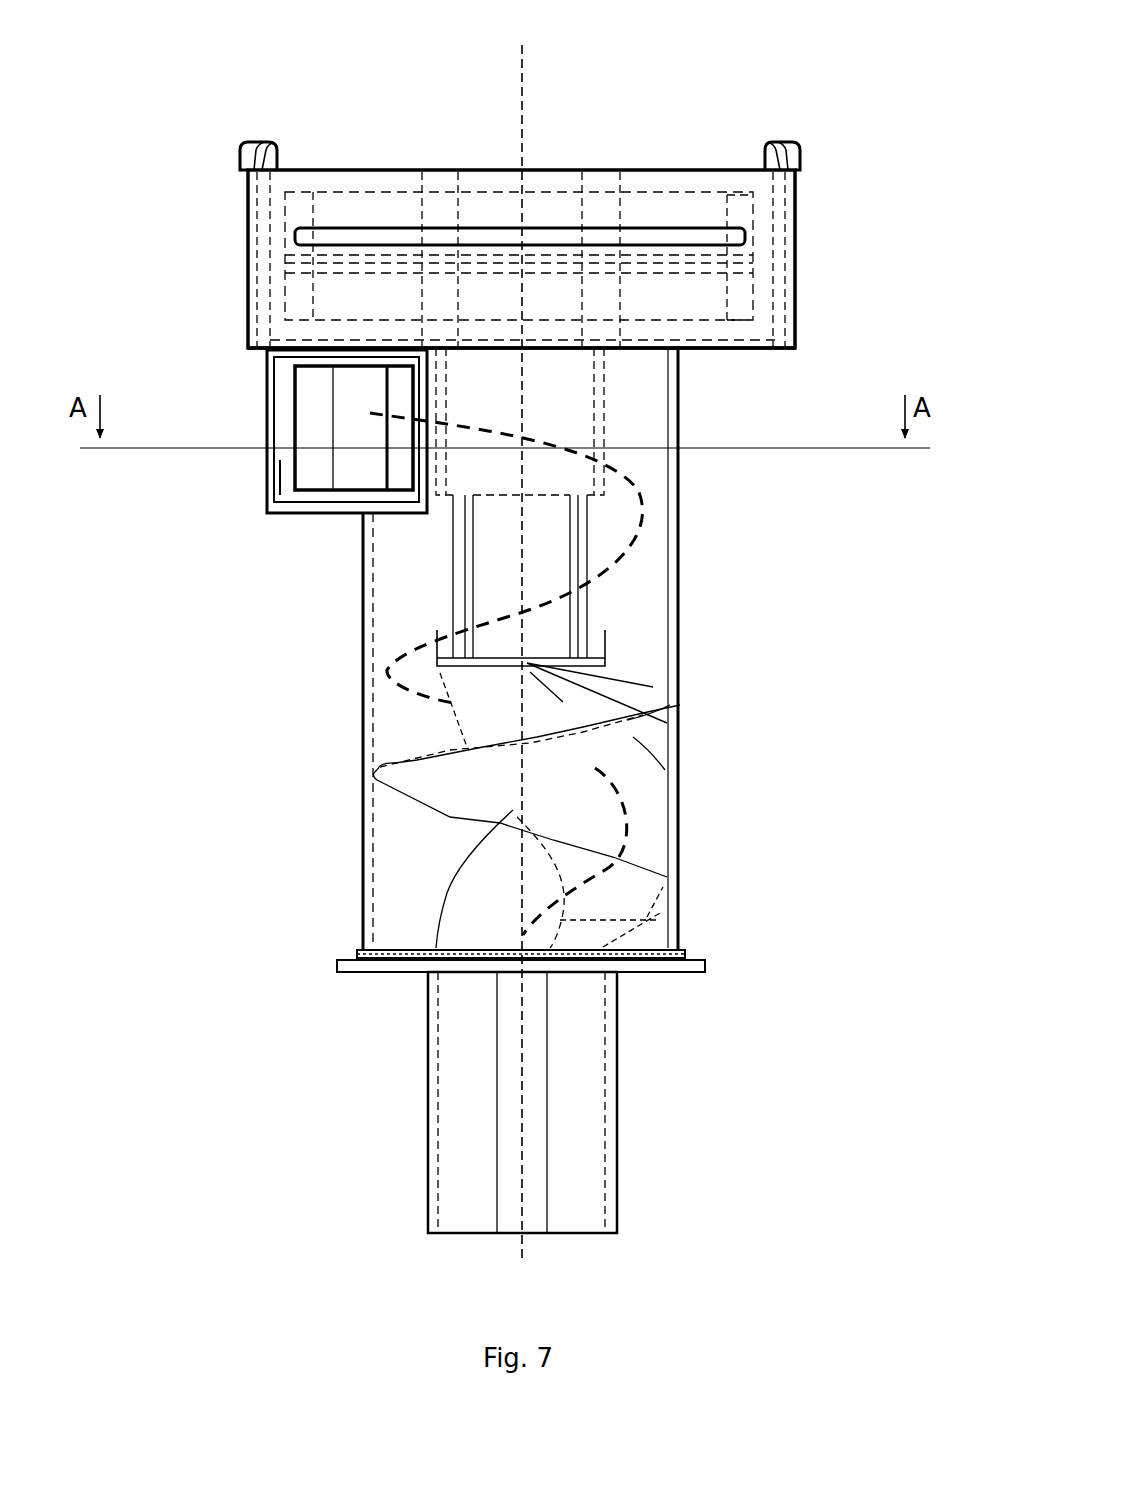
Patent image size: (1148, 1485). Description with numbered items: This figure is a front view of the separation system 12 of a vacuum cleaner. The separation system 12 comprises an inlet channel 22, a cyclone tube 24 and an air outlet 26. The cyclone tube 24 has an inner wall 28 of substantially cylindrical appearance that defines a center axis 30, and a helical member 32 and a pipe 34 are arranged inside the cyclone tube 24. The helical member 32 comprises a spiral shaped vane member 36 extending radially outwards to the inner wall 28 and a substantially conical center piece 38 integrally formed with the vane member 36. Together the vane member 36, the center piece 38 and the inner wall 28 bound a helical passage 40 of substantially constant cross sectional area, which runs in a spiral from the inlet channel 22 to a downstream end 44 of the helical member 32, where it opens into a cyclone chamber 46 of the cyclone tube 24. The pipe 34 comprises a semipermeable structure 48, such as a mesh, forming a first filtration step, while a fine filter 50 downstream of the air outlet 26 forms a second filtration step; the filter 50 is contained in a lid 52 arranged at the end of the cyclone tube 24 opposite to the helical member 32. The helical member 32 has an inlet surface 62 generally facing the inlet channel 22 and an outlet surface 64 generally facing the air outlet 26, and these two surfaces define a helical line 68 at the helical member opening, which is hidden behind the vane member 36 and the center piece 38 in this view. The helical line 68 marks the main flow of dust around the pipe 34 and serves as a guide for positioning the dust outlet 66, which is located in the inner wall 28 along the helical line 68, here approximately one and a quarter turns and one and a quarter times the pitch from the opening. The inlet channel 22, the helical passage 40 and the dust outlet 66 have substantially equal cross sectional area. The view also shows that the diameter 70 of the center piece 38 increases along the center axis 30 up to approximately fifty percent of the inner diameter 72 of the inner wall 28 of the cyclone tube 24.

The separation system 12 is at (252, 86).
The inlet channel 22 is at (580, 1053).
The cyclone tube 24 is at (660, 523).
The air outlet 26 is at (545, 327).
The inner wall 28 is at (672, 424).
The center axis 30 is at (525, 73).
The helical member 32 is at (630, 885).
The pipe 34 is at (492, 553).
The vane member 36 is at (633, 737).
The center piece 38 is at (477, 713).
The helical passage 40 is at (630, 815).
The downstream end 44 is at (633, 688).
The cyclone chamber 46 is at (650, 570).
The semipermeable structure 48 is at (560, 610).
The fine filter 50 is at (320, 295).
The lid 52 is at (790, 262).
The inlet surface 62 is at (633, 737).
The outlet surface 64 is at (627, 720).
The dust outlet 66 is at (320, 430).
The helical line 68 is at (620, 478).
The diameter 70 is at (605, 636).
The inner diameter 72 is at (668, 593).